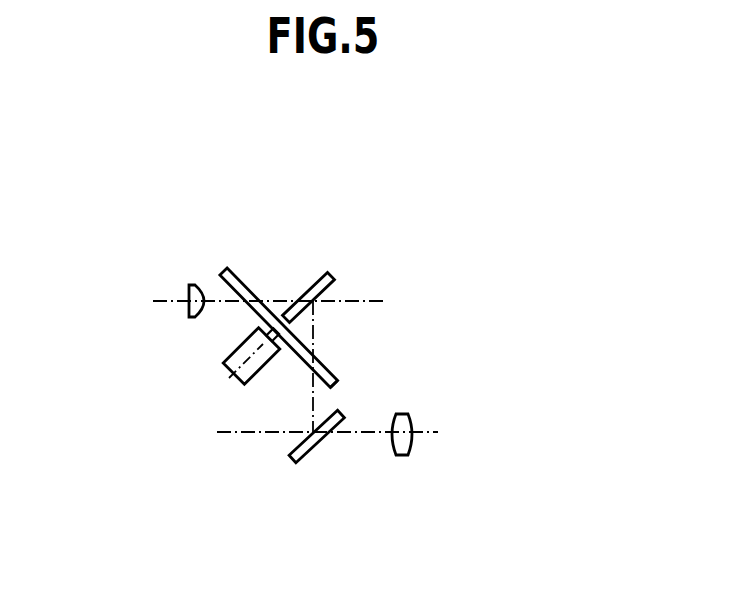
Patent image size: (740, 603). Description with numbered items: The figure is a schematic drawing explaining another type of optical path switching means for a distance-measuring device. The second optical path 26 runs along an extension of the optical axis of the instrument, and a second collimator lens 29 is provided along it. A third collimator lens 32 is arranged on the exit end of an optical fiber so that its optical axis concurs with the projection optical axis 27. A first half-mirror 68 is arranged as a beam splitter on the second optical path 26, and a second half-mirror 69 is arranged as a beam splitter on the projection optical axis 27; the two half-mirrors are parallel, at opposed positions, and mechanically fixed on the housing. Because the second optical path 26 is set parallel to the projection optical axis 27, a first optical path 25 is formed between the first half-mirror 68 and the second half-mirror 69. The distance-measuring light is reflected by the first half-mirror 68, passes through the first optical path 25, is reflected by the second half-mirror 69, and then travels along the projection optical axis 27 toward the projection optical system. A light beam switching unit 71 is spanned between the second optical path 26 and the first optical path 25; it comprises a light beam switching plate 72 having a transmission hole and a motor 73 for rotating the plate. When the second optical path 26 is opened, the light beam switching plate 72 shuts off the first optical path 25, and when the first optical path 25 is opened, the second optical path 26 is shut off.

The first optical path 25 is at (315, 342).
The second optical path 26 is at (163, 300).
The projection optical axis 27 is at (243, 432).
The second collimator lens 29 is at (195, 285).
The third collimator lens 32 is at (408, 456).
The first half-mirror 68 is at (315, 279).
The second half-mirror 69 is at (321, 446).
The light beam switching unit 71 is at (271, 301).
The light beam switching plate 72 is at (336, 374).
The motor 73 is at (247, 382).